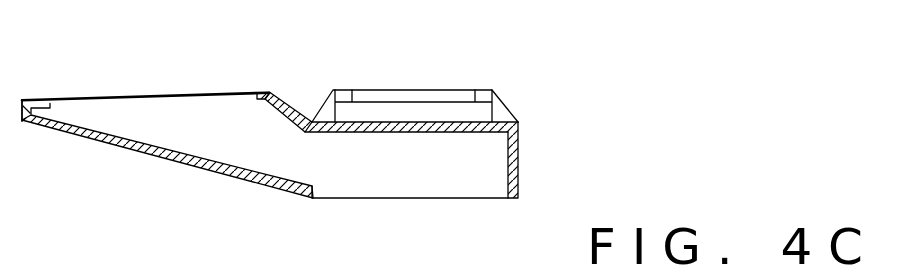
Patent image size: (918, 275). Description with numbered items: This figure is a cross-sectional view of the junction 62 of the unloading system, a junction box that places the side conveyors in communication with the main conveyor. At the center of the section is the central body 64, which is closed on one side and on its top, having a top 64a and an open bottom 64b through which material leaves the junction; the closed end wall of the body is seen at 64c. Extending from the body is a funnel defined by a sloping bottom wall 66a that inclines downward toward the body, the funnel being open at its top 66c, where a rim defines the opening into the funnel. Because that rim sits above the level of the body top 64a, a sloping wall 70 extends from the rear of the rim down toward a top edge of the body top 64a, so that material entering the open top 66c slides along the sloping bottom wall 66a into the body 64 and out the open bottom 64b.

The junction 62 is at (168, 66).
The central body 64 is at (517, 152).
The top 64a is at (430, 132).
The open bottom 64b is at (459, 193).
The end wall of base member 64c is at (518, 180).
The sloping bottom wall 66a is at (153, 153).
The open top 66c is at (90, 97).
The sloping wall 70 is at (289, 101).